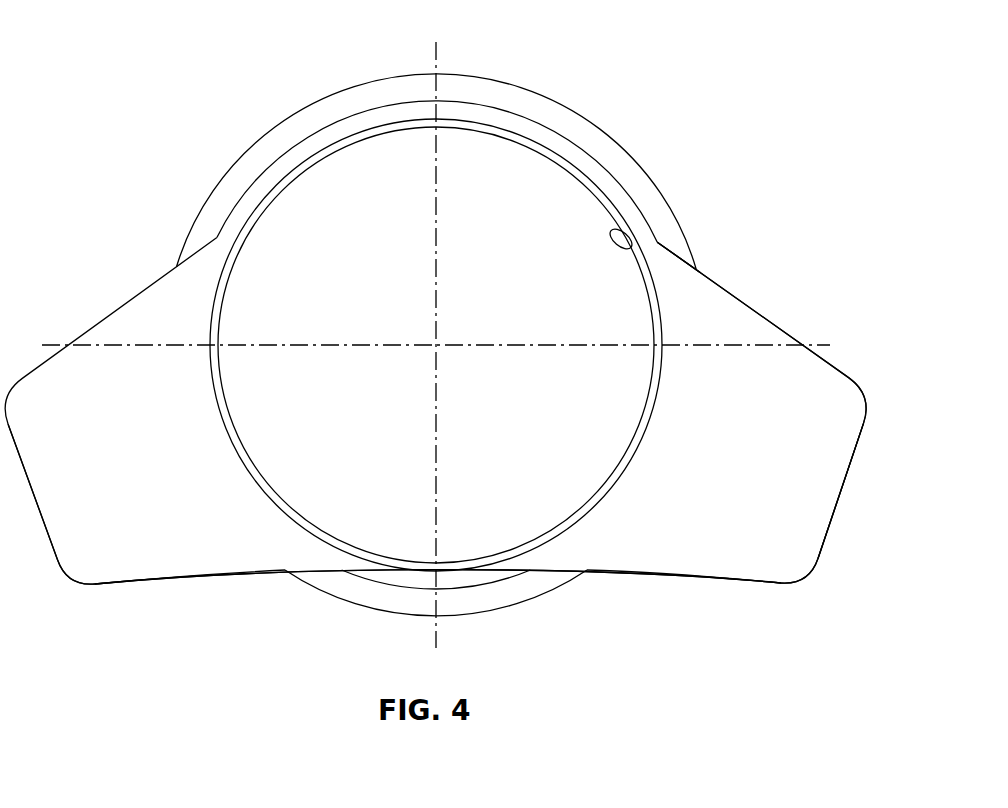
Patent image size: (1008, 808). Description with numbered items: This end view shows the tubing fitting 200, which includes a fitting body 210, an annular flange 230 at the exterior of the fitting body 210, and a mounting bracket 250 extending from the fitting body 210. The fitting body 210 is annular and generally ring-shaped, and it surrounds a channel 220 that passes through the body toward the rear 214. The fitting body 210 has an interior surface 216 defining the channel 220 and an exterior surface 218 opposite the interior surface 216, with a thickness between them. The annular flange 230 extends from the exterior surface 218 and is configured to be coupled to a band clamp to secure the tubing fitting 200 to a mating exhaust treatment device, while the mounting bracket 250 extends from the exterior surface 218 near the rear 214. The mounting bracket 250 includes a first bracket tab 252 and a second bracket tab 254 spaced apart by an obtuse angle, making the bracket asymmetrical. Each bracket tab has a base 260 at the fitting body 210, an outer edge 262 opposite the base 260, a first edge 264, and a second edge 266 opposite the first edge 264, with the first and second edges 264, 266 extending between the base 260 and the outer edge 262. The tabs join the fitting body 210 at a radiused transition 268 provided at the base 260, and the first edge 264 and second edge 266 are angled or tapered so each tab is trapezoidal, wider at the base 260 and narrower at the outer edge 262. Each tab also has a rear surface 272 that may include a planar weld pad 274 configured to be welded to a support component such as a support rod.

The tubing fitting 200 is at (615, 60).
The annular flange 230 is at (328, 100).
The rear 214 is at (590, 163).
The fitting body 210 is at (610, 187).
The exterior surface 218 is at (638, 207).
The interior surface 216 is at (638, 243).
The radiused transition 268 is at (668, 243).
The first edge 264 is at (767, 318).
The rear surface 272 is at (793, 380).
The weld pad 274 is at (778, 430).
The outer edge 262 is at (828, 530).
The first bracket tab 252 is at (738, 553).
The second edge 266 is at (668, 568).
The base 260 is at (550, 569).
The channel 220 is at (378, 530).
The second bracket tab 254 is at (175, 561).
The mounting bracket 250 is at (162, 598).